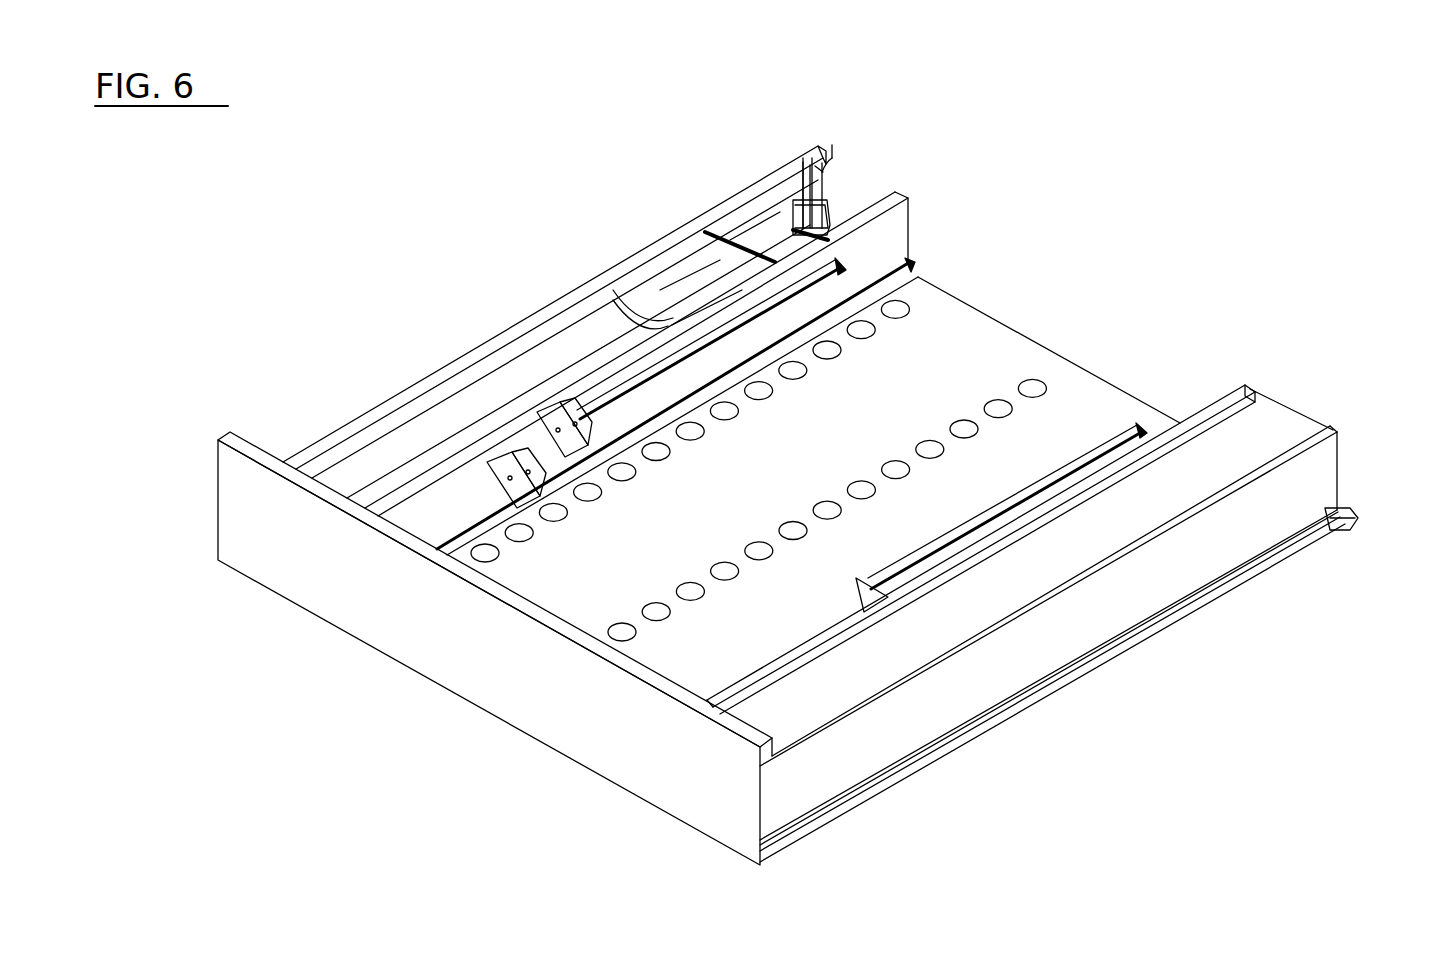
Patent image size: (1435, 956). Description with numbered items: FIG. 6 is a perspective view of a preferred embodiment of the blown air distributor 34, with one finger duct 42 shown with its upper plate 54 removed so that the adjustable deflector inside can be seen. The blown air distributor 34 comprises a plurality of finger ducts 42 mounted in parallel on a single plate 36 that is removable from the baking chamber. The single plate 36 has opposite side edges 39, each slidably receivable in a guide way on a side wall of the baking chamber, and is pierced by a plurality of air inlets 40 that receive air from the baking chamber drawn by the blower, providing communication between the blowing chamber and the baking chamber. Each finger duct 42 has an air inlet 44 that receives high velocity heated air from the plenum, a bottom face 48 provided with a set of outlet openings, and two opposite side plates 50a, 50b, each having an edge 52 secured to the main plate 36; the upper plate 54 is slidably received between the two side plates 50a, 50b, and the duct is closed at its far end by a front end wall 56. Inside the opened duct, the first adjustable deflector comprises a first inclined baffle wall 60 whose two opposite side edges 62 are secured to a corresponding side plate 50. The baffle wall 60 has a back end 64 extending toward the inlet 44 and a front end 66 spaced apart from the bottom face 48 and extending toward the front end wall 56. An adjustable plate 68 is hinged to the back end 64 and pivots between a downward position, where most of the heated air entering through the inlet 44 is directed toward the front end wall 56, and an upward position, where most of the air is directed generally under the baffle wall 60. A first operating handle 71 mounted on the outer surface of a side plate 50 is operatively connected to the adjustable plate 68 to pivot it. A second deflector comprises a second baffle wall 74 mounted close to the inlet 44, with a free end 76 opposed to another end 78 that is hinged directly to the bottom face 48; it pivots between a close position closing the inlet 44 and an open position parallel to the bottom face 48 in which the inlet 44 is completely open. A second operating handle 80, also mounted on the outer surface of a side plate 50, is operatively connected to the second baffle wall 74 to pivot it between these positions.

The blown air distributor 34 is at (346, 258).
The single plate 36 is at (1103, 413).
The side edges 39 is at (1075, 680).
The air inlets 40 is at (968, 427).
The finger duct 42 is at (487, 338).
The air inlet 44 is at (885, 178).
The bottom face 48 is at (425, 467).
The side plate 50 is at (1330, 470).
The side plate 50a is at (443, 407).
The side plate 50b is at (905, 240).
The edge 52 is at (1352, 512).
The upper plate 54 is at (1220, 427).
The front end wall 56 is at (322, 520).
The first inclined baffle wall 60 is at (695, 268).
The side edges 62 is at (660, 285).
The back end 64 is at (730, 238).
The front end 66 is at (613, 300).
The adjustable plate 68 is at (767, 240).
The first operating handle 71 is at (672, 396).
The second baffle wall 74 is at (832, 150).
The free end 76 is at (808, 228).
The end 78 is at (802, 226).
The second operating handle 80 is at (590, 485).